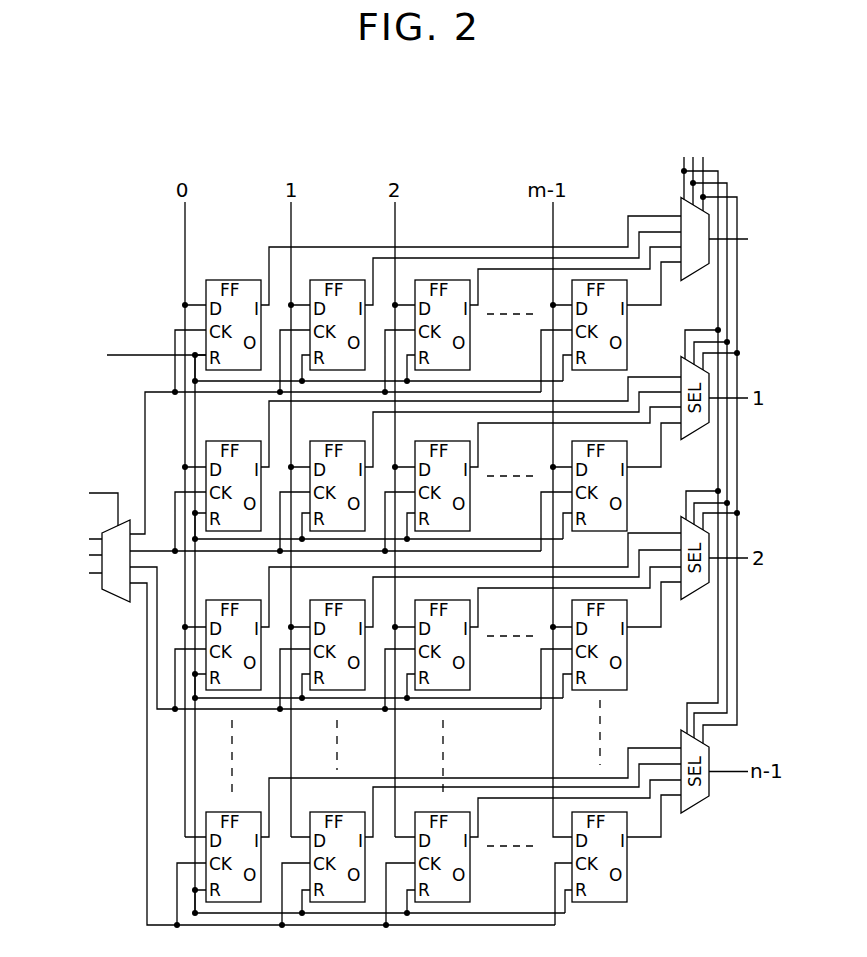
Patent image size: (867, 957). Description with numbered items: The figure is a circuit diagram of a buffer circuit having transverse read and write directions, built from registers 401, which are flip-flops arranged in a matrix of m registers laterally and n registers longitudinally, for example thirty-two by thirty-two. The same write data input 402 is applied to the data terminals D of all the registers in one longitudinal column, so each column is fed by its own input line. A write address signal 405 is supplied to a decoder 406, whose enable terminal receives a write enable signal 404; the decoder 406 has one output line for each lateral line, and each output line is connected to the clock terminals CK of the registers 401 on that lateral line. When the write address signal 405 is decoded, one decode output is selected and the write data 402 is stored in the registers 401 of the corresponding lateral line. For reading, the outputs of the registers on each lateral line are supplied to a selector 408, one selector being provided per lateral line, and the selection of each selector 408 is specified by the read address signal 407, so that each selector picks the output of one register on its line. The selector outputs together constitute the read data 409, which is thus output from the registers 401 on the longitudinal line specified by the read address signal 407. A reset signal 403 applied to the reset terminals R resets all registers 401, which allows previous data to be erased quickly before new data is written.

The register (flip-flop) 401 is at (225, 279).
The input (write data) 402 is at (187, 178).
The reset signal 403 is at (118, 355).
The write enable signal 404 is at (104, 493).
The write address signal 405 is at (89, 535).
The decoder 406 is at (112, 598).
The read address signal 407 is at (712, 154).
The selector 408 is at (680, 207).
The read data 409 is at (741, 237).